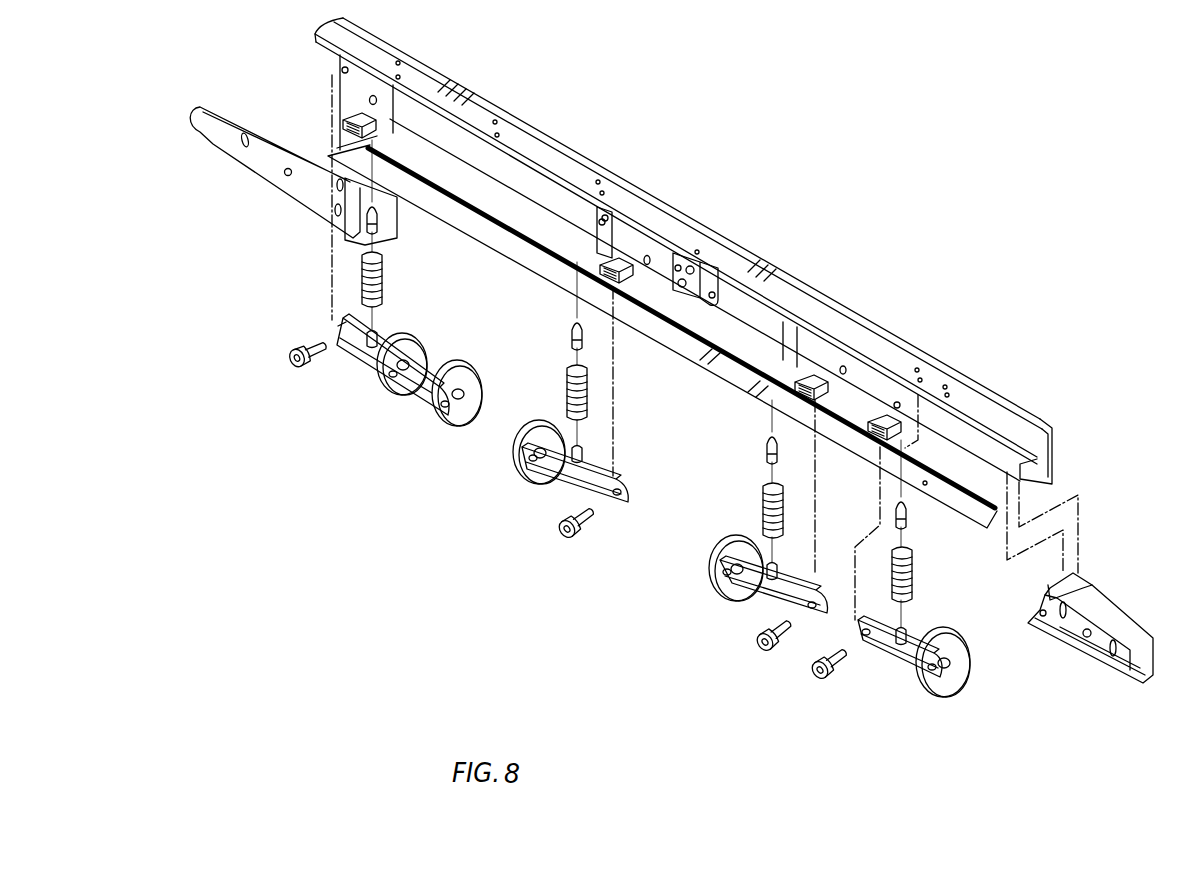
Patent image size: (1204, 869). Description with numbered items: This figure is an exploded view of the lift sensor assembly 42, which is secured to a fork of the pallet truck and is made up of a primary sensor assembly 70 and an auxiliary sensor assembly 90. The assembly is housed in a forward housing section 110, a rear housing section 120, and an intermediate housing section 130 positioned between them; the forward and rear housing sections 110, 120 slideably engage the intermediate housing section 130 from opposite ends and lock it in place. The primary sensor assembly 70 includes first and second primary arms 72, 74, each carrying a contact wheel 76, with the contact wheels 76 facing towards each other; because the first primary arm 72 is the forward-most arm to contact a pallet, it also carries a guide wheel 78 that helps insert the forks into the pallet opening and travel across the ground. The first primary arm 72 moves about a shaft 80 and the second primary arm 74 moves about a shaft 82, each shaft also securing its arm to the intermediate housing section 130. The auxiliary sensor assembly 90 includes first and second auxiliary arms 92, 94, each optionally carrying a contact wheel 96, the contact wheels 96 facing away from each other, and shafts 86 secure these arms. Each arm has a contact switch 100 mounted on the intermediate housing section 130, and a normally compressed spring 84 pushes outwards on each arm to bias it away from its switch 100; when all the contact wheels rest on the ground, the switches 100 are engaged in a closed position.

The lift sensor assembly 42 is at (817, 100).
The primary sensor assembly 70 is at (262, 453).
The first primary arm 72 is at (355, 358).
The second primary arm 74 is at (570, 488).
The contact wheel 76 is at (518, 470).
The guide wheel 78 is at (404, 402).
The shaft 80 is at (290, 358).
The shaft 82 is at (566, 533).
The spring 84 is at (386, 280).
The shafts 86 is at (812, 668).
The auxiliary sensor assembly 90 is at (632, 672).
The first auxiliary arm 92 is at (763, 602).
The second auxiliary arm 94 is at (878, 650).
The contact wheel 96 is at (720, 580).
The contact switch 100 is at (363, 116).
The forward housing section 110 is at (228, 112).
The rear housing section 120 is at (1128, 617).
The intermediate housing section 130 is at (487, 100).